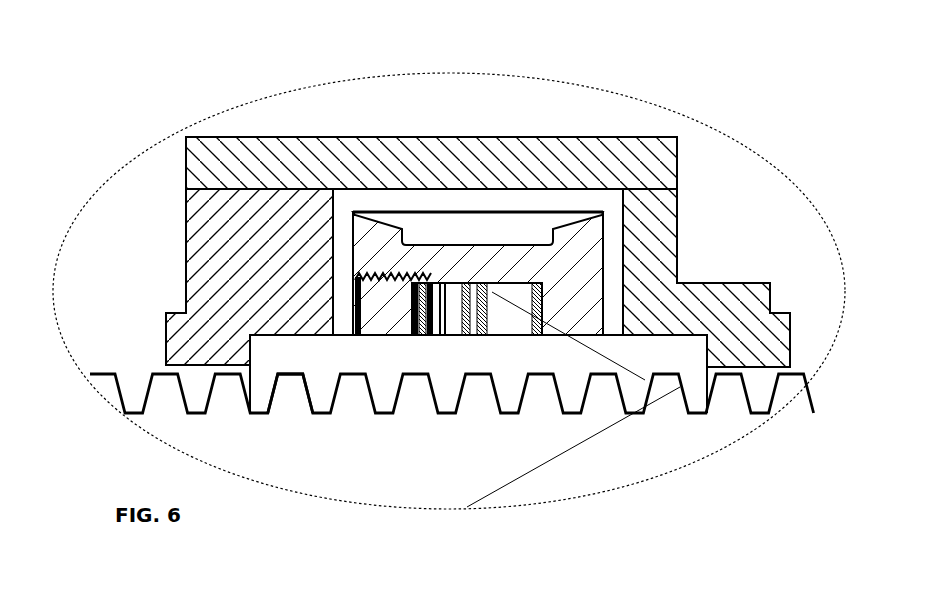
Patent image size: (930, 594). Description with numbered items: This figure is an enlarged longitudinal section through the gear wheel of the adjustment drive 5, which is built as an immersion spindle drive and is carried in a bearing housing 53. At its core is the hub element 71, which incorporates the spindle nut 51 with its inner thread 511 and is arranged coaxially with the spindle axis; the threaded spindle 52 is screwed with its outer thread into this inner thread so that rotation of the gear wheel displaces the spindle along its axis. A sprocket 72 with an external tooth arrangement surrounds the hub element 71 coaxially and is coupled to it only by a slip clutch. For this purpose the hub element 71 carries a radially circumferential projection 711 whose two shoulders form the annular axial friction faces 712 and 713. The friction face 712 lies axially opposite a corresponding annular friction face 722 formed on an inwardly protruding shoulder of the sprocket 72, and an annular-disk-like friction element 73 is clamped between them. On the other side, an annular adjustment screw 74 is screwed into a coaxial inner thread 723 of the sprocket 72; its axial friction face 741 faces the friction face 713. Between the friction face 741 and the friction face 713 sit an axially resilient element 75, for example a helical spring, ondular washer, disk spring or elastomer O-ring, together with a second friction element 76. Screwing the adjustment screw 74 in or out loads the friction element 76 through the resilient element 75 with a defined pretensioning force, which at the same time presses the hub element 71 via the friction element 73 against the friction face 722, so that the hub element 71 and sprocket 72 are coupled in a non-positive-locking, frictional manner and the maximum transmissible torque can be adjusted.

The adjustment drive 5 is at (589, 98).
The spindle nut 51 is at (273, 355).
The inner thread 511 is at (274, 393).
The threaded spindle 52 is at (690, 440).
The bearing housing 53 is at (645, 155).
The hub element 71 is at (643, 346).
The circumferential projection 711 is at (500, 295).
The friction face 712 is at (522, 313).
The friction face 713 is at (510, 280).
The sprocket 72 is at (613, 258).
The friction face 722 is at (546, 316).
The inner thread 723 is at (386, 283).
The friction element 73 is at (537, 283).
The adjustment screw 74 is at (389, 297).
The friction face 741 is at (407, 313).
The resilient element 75 is at (455, 283).
The friction element 76 is at (483, 283).